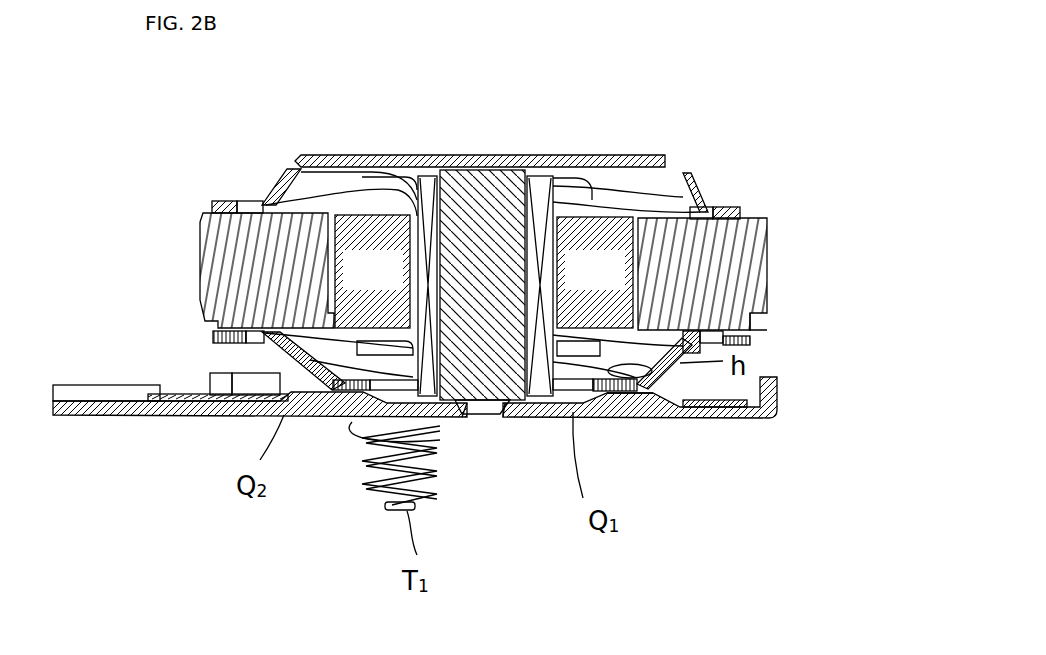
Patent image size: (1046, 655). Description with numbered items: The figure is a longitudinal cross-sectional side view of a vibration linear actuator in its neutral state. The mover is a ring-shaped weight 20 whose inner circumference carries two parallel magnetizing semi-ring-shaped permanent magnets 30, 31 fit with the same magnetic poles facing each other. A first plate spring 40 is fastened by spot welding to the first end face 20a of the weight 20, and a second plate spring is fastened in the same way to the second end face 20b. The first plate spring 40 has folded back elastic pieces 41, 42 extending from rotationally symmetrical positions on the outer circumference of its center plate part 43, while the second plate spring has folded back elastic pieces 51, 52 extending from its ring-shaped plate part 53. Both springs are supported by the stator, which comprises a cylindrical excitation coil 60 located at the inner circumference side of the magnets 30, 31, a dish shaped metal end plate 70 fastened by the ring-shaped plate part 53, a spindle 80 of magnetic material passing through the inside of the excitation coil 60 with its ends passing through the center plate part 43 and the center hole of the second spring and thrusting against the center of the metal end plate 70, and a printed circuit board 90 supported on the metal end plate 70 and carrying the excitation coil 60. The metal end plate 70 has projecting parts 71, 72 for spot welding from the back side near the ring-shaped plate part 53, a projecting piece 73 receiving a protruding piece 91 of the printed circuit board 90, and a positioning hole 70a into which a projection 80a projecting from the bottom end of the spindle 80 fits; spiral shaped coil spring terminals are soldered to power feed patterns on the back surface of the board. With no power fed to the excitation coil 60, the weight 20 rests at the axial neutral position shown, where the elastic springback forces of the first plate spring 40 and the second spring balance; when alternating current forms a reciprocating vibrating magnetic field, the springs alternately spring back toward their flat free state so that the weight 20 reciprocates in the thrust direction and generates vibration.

The ring-shaped weight 20 is at (773, 257).
The first end face 20a is at (745, 219).
The second end face 20b is at (753, 348).
The semi-ring-shaped permanent magnet 30 is at (612, 237).
The semi-ring-shaped permanent magnet 31 is at (378, 218).
The first plate spring 40 is at (462, 150).
The folded back elastic piece 41 is at (740, 210).
The folded back elastic piece 42 is at (230, 199).
The center plate part 43 is at (556, 205).
The folded back elastic piece 51 is at (750, 340).
The folded back elastic piece 52 is at (213, 318).
The ring-shaped plate part 53 is at (610, 412).
The excitation coil 60 is at (541, 185).
The metal end plate 70 is at (557, 425).
The positioning hole 70a is at (468, 420).
The projecting part 71 is at (630, 412).
The projecting part 72 is at (330, 415).
The projecting piece 73 is at (91, 410).
The spindle 80 is at (490, 230).
The projection 80a is at (475, 418).
The printed circuit board 90 is at (240, 386).
The protruding piece 91 is at (178, 392).